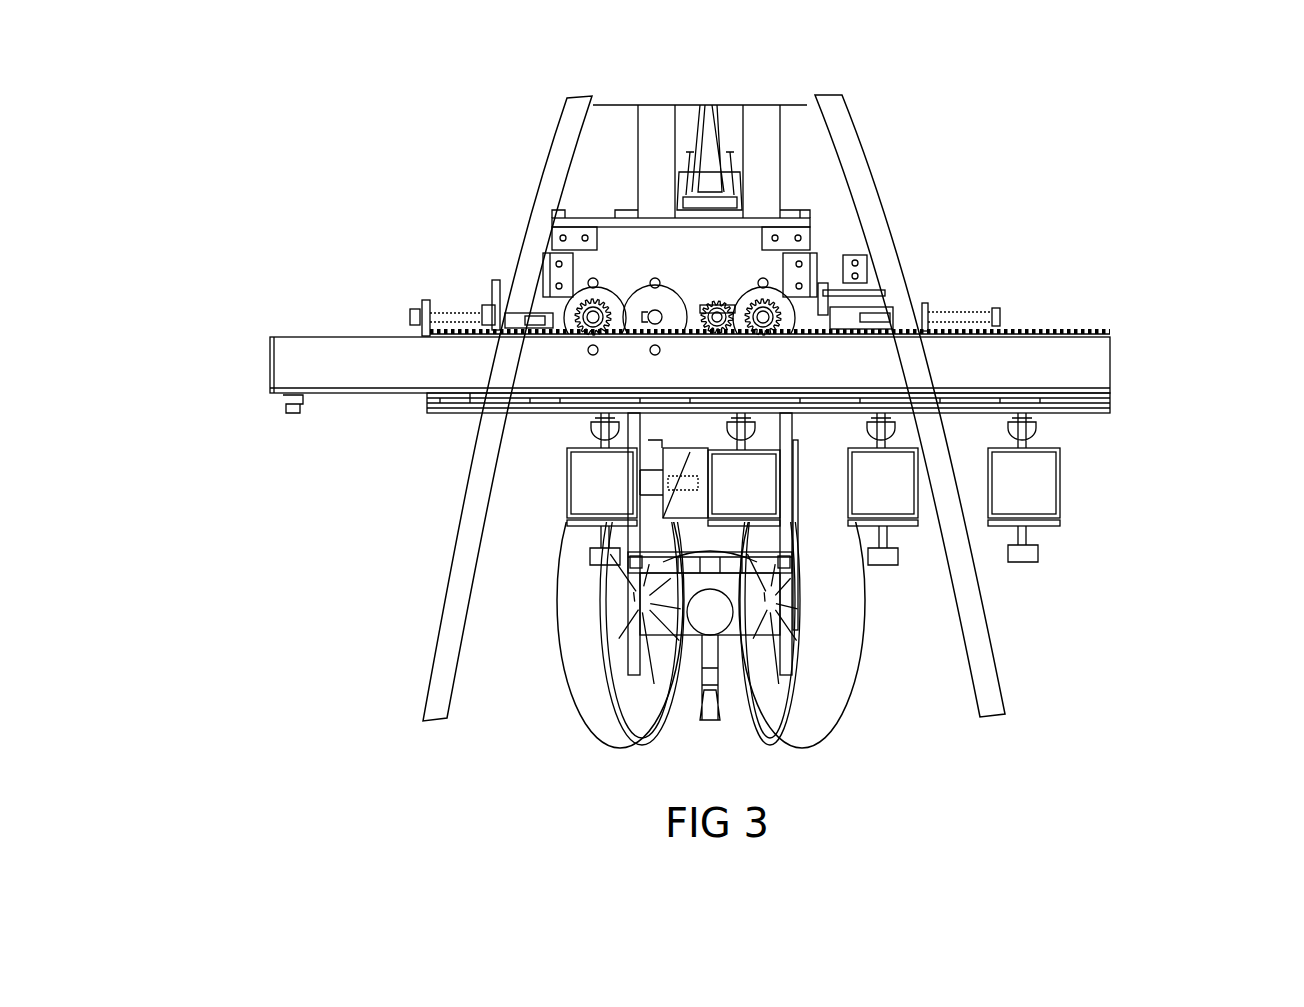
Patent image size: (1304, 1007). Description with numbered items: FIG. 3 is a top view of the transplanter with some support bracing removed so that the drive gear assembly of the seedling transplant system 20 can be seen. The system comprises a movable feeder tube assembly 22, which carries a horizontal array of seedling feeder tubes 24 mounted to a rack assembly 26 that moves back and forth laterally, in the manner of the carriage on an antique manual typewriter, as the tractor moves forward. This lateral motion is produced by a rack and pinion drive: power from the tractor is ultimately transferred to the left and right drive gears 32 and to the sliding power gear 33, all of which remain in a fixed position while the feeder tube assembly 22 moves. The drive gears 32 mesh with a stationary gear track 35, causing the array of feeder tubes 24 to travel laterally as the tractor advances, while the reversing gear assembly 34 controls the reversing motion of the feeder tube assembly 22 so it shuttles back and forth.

The seedling transplant system 20 is at (1052, 200).
The movable feeder tube assembly 22 is at (1118, 460).
The seedling feeder tubes 24 is at (1062, 517).
The rack assembly 26 is at (316, 354).
The left and right drive gears 32 is at (572, 310).
The sliding power gear 33 is at (722, 302).
The reversing gear assembly 34 is at (642, 282).
The gear track 35 is at (1038, 330).